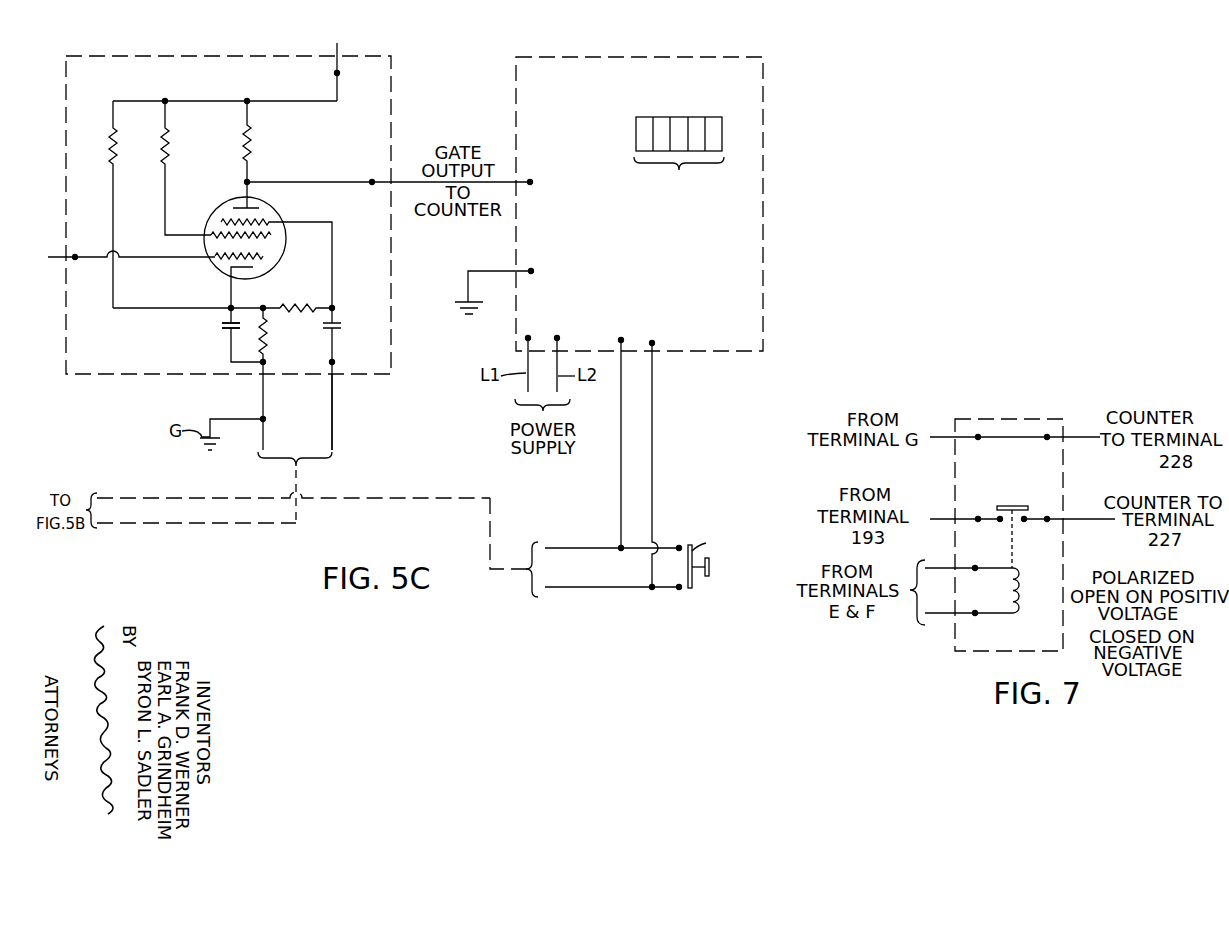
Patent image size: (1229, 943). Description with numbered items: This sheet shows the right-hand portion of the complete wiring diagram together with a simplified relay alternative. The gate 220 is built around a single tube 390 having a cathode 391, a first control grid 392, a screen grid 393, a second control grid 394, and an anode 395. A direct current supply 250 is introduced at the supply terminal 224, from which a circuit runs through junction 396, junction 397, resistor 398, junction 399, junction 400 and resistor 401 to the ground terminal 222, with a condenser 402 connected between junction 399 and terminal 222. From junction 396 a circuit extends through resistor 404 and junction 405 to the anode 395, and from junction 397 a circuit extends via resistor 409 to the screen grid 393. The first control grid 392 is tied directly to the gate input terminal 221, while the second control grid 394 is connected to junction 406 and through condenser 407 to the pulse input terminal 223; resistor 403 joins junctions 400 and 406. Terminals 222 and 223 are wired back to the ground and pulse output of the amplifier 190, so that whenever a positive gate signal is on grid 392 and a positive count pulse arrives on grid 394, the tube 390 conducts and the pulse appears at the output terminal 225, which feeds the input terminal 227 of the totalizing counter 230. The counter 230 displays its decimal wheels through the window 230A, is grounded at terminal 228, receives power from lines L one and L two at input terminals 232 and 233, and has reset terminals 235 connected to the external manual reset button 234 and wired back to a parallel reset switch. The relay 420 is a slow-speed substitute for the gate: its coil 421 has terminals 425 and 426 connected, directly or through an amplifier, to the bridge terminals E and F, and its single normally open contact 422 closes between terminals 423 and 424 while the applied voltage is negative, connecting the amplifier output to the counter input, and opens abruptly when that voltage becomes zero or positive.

In FIG. 5C, the gate 220 is at (85, 56).
In FIG. 5C, the direct current supply 250 is at (337, 47).
In FIG. 5C, the supply terminal 224 is at (336, 74).
In FIG. 5C, the junction 397 is at (165, 100).
In FIG. 5C, the junction 396 is at (247, 100).
In FIG. 5C, the resistor 398 is at (113, 158).
In FIG. 5C, the resistor 409 is at (170, 150).
In FIG. 5C, the resistor 404 is at (252, 142).
In FIG. 5C, the junction 405 is at (244, 182).
In FIG. 5C, the output terminal 225 is at (372, 180).
In FIG. 5C, the input terminal 227 is at (531, 181).
In FIG. 5C, the tube 390 is at (215, 269).
In FIG. 5C, the anode 395 is at (258, 209).
In FIG. 5C, the second control grid 394 is at (220, 222).
In FIG. 5C, the screen grid 393 is at (281, 224).
In FIG. 5C, the first control grid 392 is at (266, 256).
In FIG. 5C, the cathode 391 is at (254, 268).
In FIG. 5C, the gate input terminal 221 is at (75, 259).
In FIG. 5C, the resistor 403 is at (304, 307).
In FIG. 5C, the junction 400 is at (263, 306).
In FIG. 5C, the junction 406 is at (333, 306).
In FIG. 5C, the junction 399 is at (230, 310).
In FIG. 5C, the condenser 402 is at (230, 332).
In FIG. 5C, the resistor 401 is at (267, 333).
In FIG. 5C, the signal input terminal 222 is at (265, 362).
In FIG. 5C, the condenser 407 is at (341, 330).
In FIG. 5C, the signal input terminal 223 is at (339, 356).
In FIG. 5C, the amplifier 190 is at (332, 441).
In FIG. 5C, the totalizing counter 230 is at (766, 310).
In FIG. 5C, the window 230A is at (678, 140).
In FIG. 5C, the ground terminal 228 is at (532, 270).
In FIG. 5C, the input terminal 232 is at (528, 337).
In FIG. 5C, the input terminal 233 is at (557, 337).
In FIG. 5C, the reset terminals 235 is at (621, 339).
In FIG. 5C, the manual reset button 234 is at (692, 584).
In FIG. 7, the polarized relay 420 is at (1002, 640).
In FIG. 7, the normally open contact 422 is at (1012, 506).
In FIG. 7, the contact terminal 423 is at (978, 521).
In FIG. 7, the contact terminal 424 is at (1047, 521).
In FIG. 7, the relay coil 421 is at (1013, 613).
In FIG. 7, the coil terminal 425 is at (975, 570).
In FIG. 7, the coil terminal 426 is at (975, 615).